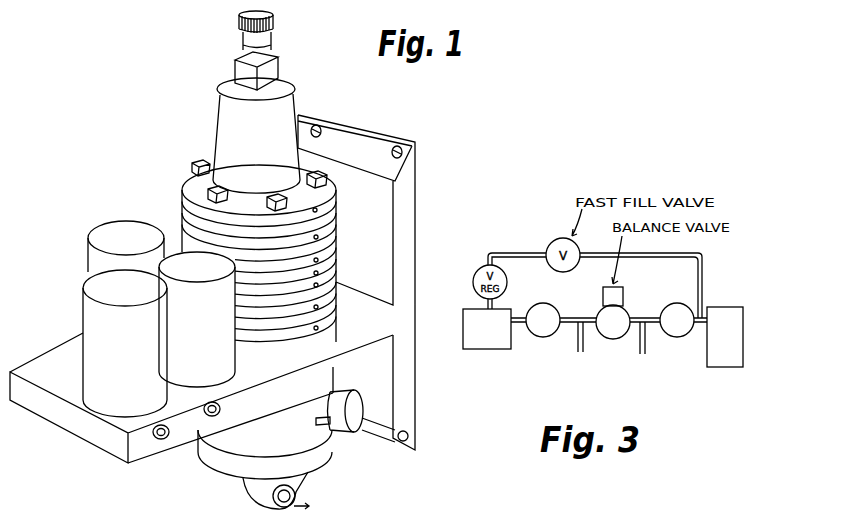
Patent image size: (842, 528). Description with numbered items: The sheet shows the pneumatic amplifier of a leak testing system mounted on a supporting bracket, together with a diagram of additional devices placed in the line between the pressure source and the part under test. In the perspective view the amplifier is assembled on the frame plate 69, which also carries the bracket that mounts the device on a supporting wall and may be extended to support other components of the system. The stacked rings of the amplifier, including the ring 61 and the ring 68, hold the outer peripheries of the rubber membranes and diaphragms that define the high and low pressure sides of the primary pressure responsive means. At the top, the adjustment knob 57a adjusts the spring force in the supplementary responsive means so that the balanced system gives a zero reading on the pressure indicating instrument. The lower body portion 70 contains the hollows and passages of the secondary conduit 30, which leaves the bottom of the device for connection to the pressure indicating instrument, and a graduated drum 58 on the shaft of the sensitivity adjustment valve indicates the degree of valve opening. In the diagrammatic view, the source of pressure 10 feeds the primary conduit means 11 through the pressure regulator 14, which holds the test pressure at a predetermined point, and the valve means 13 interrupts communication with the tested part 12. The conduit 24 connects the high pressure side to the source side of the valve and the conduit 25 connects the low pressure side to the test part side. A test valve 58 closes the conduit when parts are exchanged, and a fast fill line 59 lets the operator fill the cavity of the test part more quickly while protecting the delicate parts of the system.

In FIG. 3, the source of pressure 10 is at (475, 343).
In FIG. 3, the primary conduit means 11 is at (568, 324).
In FIG. 3, the tested part 12 is at (712, 352).
In FIG. 3, the valve means 13 is at (597, 306).
In FIG. 3, the pressure regulator 14 is at (540, 304).
In FIG. 3, the conduit 24 is at (583, 352).
In FIG. 3, the conduit 25 is at (645, 354).
In FIG. 1, the secondary conduit 30 is at (295, 496).
In FIG. 1, the adjustment knob 57a is at (240, 25).
In FIG. 1, the test valve 58 is at (345, 434).
In FIG. 3, the test valve 58 is at (680, 303).
In FIG. 3, the fast fill line 59 is at (515, 252).
In FIG. 1, the ring 61 is at (330, 323).
In FIG. 1, the ring 68 is at (330, 322).
In FIG. 1, the frame plate 69 is at (58, 418).
In FIG. 1, the lower body portion 70 is at (228, 445).